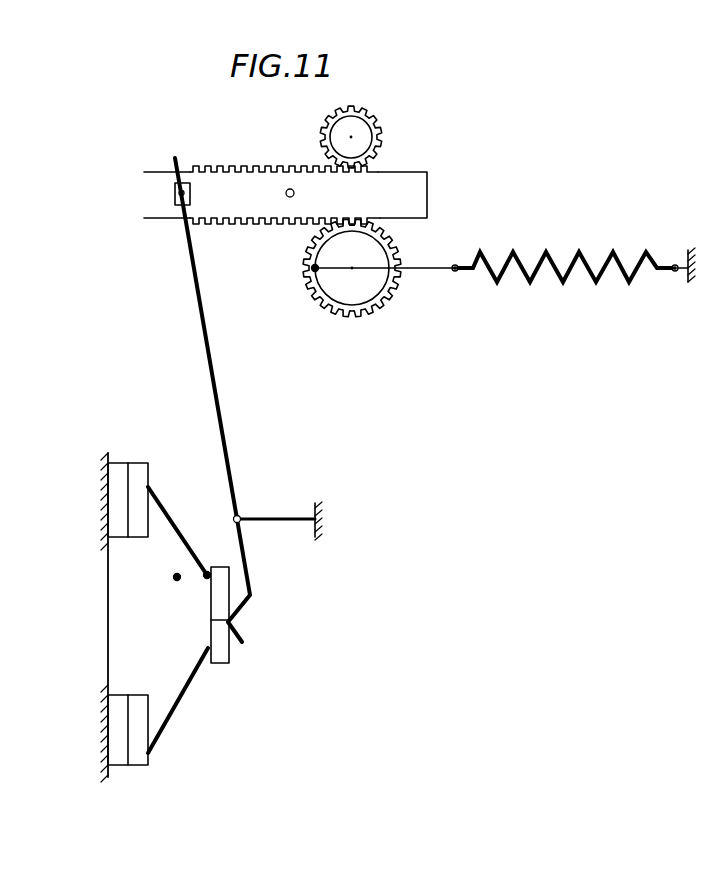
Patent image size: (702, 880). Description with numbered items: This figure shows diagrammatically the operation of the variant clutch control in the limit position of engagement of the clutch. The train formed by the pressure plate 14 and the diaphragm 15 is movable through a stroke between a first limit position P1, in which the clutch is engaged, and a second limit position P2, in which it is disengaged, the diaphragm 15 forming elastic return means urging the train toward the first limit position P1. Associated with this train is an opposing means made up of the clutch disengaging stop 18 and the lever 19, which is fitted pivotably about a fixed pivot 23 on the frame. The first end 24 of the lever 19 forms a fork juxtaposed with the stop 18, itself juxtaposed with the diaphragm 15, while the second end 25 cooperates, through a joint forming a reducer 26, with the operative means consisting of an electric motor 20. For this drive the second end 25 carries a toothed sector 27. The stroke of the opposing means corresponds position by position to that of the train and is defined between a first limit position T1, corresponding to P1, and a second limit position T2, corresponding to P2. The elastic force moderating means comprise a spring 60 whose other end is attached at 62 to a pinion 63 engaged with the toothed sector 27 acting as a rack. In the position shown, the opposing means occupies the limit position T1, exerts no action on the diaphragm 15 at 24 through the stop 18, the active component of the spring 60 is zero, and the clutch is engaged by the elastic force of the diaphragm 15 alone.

The toothed sector 27 is at (428, 172).
The second end 25 is at (178, 166).
The first limit position T1 is at (180, 190).
The second limit position T2 is at (288, 190).
The operative means 20 is at (365, 132).
The reducer 26 is at (318, 158).
The pinion 63 is at (364, 313).
The attachment point 62 is at (312, 266).
The spring 60 is at (582, 250).
The lever 19 is at (215, 388).
The fixed pivot 23 is at (241, 517).
The pressure plate 14 is at (143, 472).
The diaphragm 15 is at (172, 510).
The first end 24 is at (211, 622).
The clutch disengaging stop 18 is at (229, 665).
The first limit position P1 is at (208, 572).
The second limit position P2 is at (176, 581).